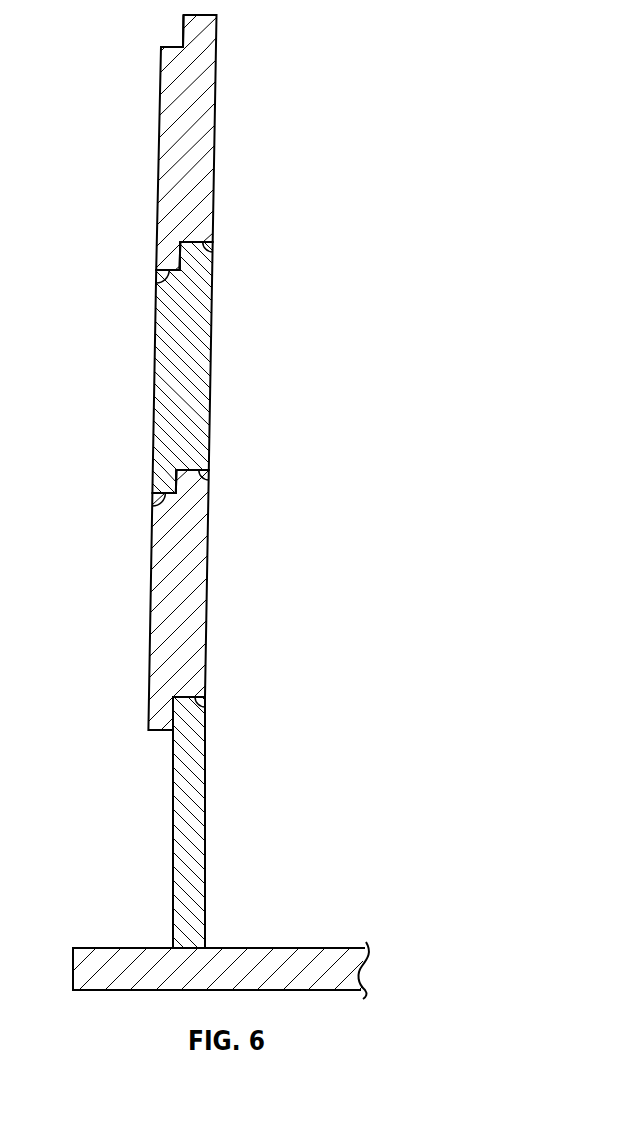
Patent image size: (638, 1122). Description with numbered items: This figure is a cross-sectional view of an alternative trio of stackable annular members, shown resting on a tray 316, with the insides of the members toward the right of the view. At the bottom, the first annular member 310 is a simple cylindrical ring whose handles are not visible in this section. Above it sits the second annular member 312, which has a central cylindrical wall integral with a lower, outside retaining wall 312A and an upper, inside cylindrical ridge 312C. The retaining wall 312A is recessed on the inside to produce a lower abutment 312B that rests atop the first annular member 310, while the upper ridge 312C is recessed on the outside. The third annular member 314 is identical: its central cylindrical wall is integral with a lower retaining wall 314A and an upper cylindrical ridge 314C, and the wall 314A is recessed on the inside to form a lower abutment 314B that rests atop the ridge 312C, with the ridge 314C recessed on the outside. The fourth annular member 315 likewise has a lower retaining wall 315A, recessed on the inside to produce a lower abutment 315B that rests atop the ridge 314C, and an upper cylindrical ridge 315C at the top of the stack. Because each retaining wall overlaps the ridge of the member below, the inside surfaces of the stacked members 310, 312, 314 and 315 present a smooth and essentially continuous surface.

The first annular member 310 is at (206, 822).
The second annular member 312 is at (207, 568).
The lower retaining wall 312A is at (148, 733).
The lower abutment 312B is at (207, 712).
The upper cylindrical ridge 312C is at (154, 480).
The third annular member 314 is at (212, 338).
The lower retaining wall 314A is at (152, 509).
The lower abutment 314B is at (208, 486).
The upper cylindrical ridge 314C is at (158, 254).
The fourth annular member 315 is at (214, 143).
The lower retaining wall 315A is at (157, 287).
The lower abutment 315B is at (211, 259).
The upper cylindrical ridge 315C is at (183, 37).
The tray 316 is at (118, 947).